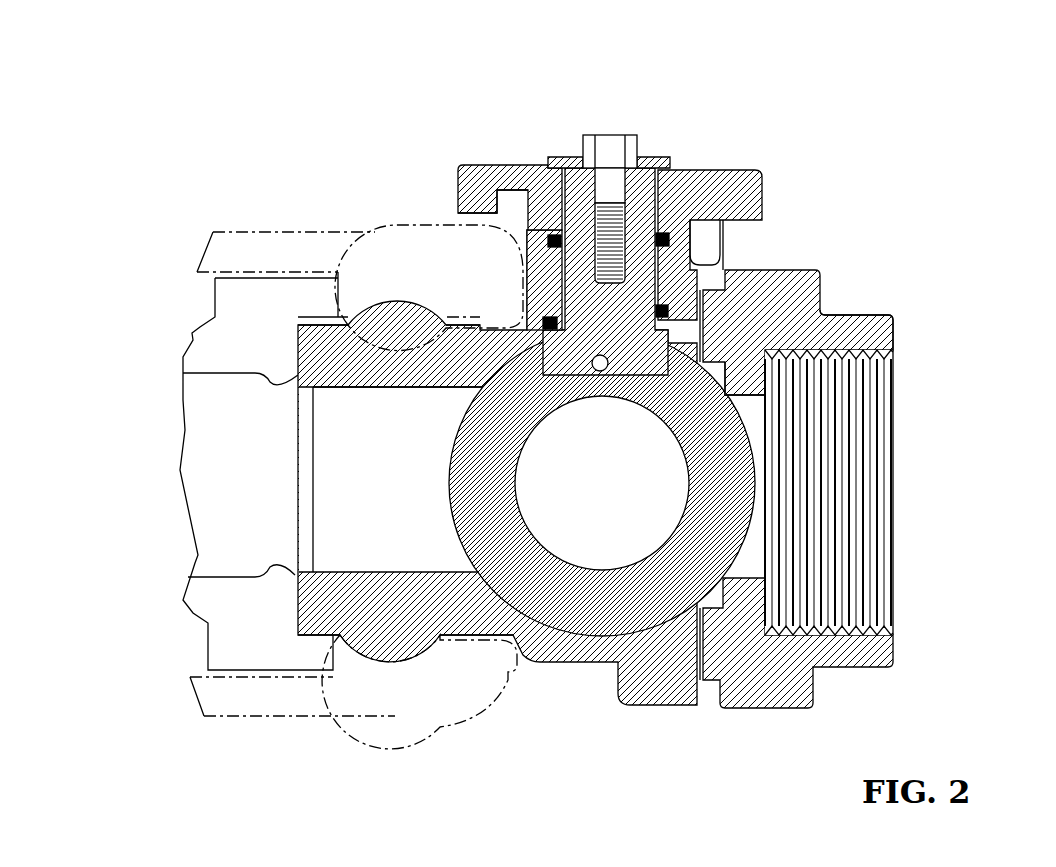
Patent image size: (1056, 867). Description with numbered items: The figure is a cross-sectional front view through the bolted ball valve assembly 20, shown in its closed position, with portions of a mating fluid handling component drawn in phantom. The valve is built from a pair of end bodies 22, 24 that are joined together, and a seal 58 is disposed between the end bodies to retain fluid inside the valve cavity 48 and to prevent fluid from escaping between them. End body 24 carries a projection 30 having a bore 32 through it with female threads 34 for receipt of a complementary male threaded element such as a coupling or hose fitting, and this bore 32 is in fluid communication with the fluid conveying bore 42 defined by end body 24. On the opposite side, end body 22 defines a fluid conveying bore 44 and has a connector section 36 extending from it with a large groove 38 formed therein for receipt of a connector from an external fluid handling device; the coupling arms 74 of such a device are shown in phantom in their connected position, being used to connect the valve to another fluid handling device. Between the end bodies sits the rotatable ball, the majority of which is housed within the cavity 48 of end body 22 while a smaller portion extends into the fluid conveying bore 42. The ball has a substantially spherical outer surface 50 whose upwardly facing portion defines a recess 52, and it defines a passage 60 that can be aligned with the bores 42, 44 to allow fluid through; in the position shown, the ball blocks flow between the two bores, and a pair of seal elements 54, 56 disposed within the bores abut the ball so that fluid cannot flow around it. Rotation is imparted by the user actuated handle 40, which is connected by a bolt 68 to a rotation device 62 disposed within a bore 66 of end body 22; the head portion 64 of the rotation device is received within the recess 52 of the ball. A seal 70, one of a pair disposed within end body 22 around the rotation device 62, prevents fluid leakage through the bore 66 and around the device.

The bolted ball valve assembly 20 is at (951, 90).
The end body 22 is at (640, 707).
The end body 24 is at (765, 708).
The projection 30 is at (875, 330).
The bore 32 is at (872, 520).
The female threads 34 is at (898, 372).
The connector section 36 is at (323, 350).
The large groove 38 is at (408, 570).
The user actuated handle 40 is at (748, 180).
The fluid conveying bore 42 is at (752, 558).
The fluid conveying bore 44 is at (327, 470).
The valve cavity 48 is at (645, 563).
The substantially spherical outer surface 50 is at (452, 455).
The recess 52 is at (600, 371).
The seal element 54 is at (676, 430).
The seal element 56 is at (478, 392).
The seal 58 is at (727, 268).
The passage 60 is at (540, 495).
The rotation device 62 is at (655, 190).
The head portion 64 is at (527, 305).
The bore 66 is at (513, 163).
The bolt 68 is at (608, 165).
The seal 70 is at (680, 248).
The coupling arms 74 is at (365, 255).